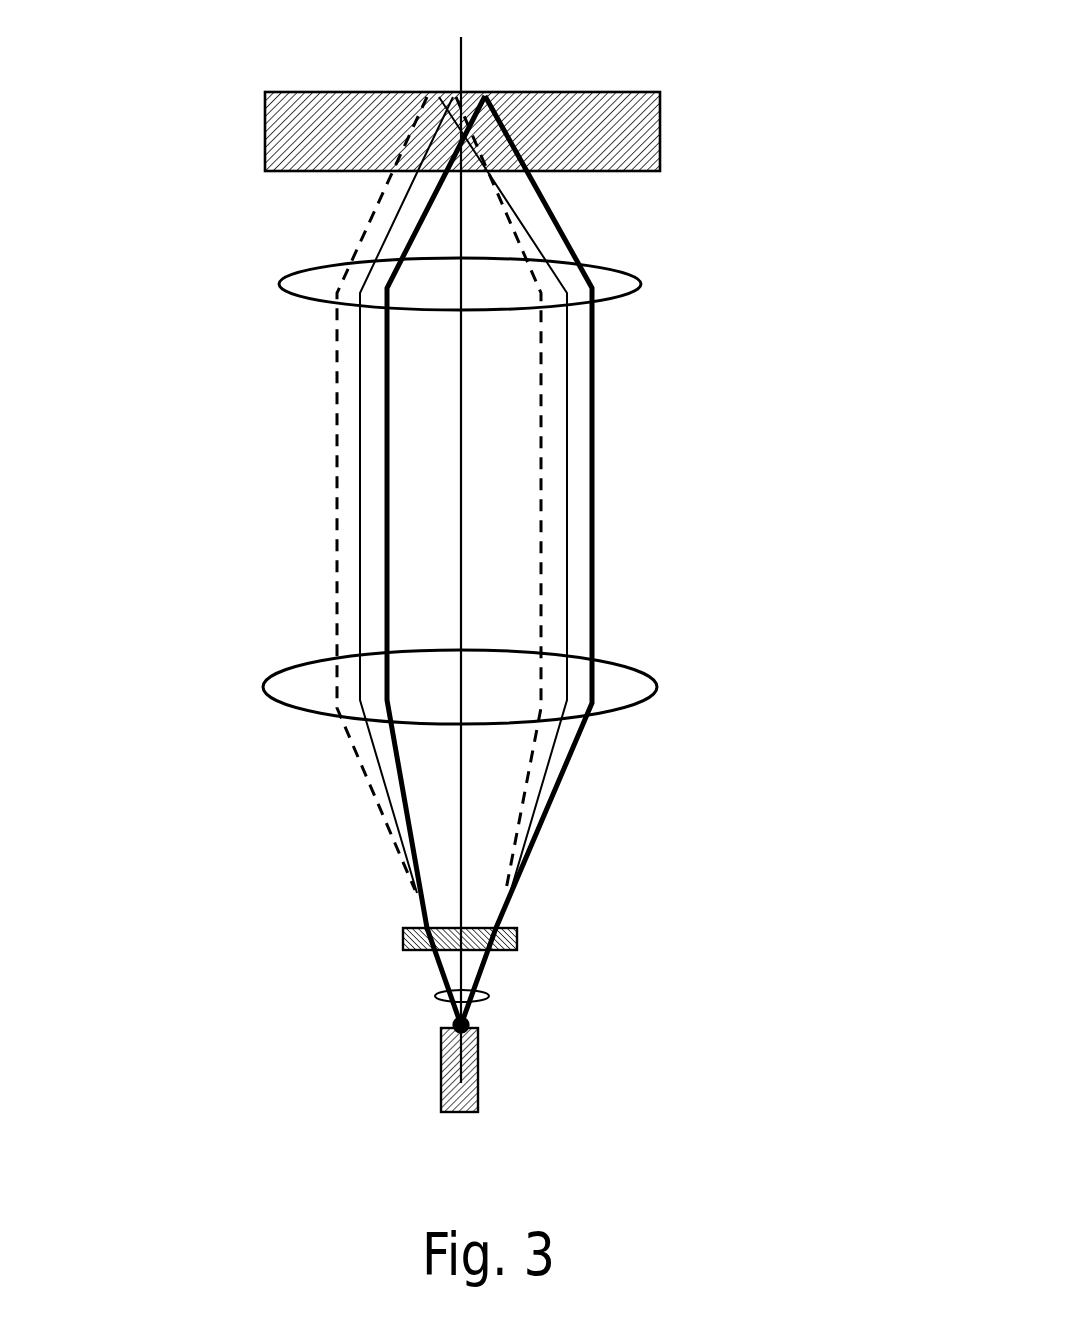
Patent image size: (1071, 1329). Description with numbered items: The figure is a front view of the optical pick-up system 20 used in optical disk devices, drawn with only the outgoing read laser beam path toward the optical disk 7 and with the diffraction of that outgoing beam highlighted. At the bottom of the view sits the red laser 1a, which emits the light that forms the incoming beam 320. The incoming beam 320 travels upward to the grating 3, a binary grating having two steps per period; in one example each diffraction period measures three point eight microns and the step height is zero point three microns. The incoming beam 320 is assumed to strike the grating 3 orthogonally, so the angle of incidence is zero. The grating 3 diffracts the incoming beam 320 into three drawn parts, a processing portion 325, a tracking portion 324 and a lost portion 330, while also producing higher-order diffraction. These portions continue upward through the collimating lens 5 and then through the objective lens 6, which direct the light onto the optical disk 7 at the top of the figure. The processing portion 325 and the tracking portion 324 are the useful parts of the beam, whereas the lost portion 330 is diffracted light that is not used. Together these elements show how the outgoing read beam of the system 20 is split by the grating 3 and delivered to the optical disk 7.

The optical pick-up system 20 is at (224, 76).
The optical disk 7 is at (683, 43).
The objective lens 6 is at (640, 287).
The collimating lens 5 is at (603, 662).
The lost portion 330 is at (335, 463).
The processing portion 325 is at (372, 752).
The tracking portion 324 is at (563, 765).
The grating 3 is at (405, 932).
The incoming beam 320 is at (440, 995).
The red laser 1a is at (465, 1112).